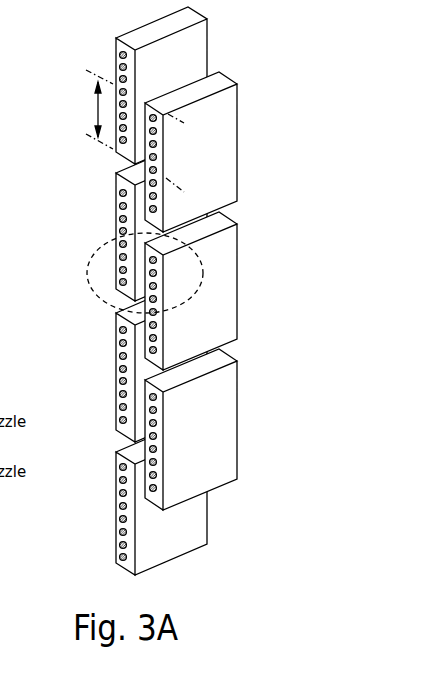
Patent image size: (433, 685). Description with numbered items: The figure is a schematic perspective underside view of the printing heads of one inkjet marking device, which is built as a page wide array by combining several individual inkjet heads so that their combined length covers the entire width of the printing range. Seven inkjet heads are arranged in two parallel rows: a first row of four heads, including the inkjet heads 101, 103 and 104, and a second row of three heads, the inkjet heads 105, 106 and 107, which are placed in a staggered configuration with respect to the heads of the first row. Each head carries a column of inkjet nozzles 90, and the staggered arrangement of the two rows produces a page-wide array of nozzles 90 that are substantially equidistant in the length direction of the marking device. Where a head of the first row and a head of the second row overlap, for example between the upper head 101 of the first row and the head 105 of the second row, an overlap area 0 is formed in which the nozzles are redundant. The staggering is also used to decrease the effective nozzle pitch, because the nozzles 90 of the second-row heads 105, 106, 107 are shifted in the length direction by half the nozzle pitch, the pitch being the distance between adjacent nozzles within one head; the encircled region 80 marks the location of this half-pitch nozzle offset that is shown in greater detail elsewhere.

The inkjet head 101 is at (203, 42).
The inkjet head 103 is at (115, 397).
The inkjet head 104 is at (197, 530).
The inkjet head 105 is at (227, 125).
The inkjet head 106 is at (228, 304).
The inkjet head 107 is at (227, 442).
The inkjet nozzles 90 is at (160, 148).
The detail region 80 is at (88, 272).
The overlap area 0 is at (100, 103).